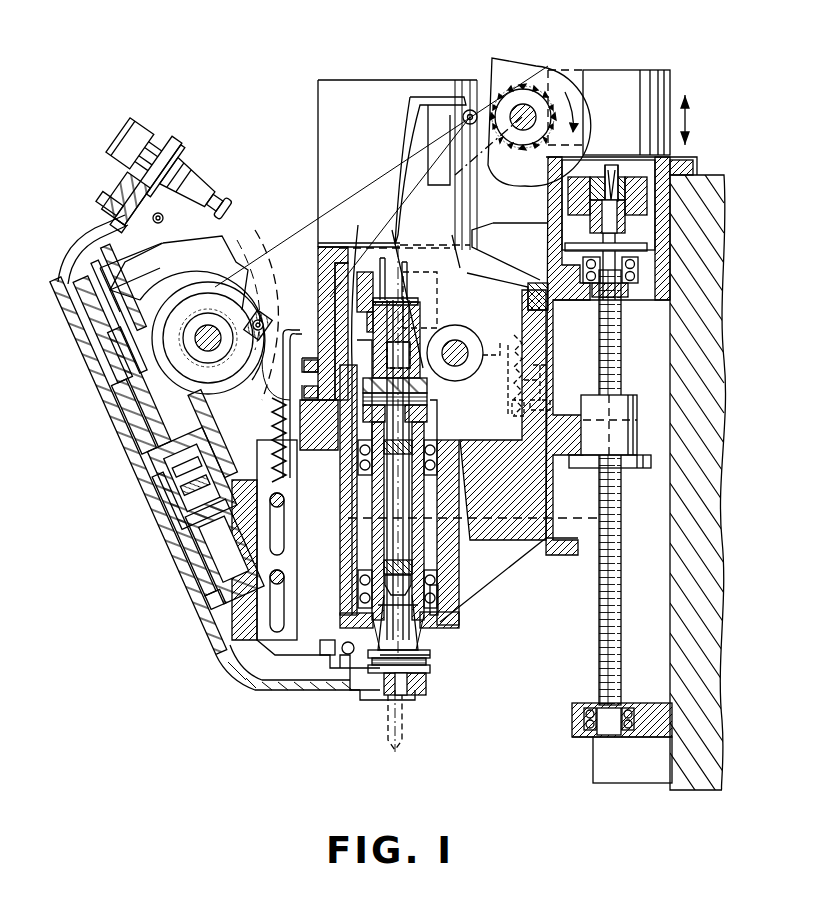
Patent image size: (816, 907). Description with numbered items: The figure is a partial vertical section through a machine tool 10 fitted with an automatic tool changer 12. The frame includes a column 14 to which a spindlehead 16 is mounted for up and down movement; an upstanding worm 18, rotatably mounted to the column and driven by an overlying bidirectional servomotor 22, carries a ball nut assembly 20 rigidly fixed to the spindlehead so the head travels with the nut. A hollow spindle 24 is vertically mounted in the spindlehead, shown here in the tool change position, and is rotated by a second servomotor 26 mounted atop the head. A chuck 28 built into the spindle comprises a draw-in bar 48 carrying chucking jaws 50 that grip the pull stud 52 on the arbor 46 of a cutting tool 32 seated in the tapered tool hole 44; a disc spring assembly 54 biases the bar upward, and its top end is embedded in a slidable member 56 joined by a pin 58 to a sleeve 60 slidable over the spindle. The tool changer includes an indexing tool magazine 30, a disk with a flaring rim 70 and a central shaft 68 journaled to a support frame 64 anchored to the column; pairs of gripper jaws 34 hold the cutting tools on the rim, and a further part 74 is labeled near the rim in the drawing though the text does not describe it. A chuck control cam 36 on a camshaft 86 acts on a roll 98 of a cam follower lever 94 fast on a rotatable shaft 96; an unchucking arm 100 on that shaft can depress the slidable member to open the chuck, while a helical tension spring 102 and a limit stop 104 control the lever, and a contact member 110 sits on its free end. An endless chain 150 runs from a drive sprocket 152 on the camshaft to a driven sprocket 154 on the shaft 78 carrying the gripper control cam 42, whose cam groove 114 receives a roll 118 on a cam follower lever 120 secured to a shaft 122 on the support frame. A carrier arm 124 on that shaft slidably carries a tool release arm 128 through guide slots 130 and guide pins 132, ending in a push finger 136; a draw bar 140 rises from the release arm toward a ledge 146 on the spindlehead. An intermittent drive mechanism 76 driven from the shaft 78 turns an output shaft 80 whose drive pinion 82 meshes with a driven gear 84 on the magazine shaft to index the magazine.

The machine tool 10 is at (733, 176).
The automatic tool changer 12 is at (276, 122).
The column 14 is at (704, 545).
The spindlehead 16 is at (517, 548).
The worm 18 is at (603, 578).
The ball nut assembly 20 is at (634, 395).
The bidirectional servomotor 22 is at (620, 72).
The hollow spindle 24 is at (423, 637).
The second servomotor 26 is at (336, 88).
The chuck 28 is at (447, 568).
The tool magazine 30 is at (58, 300).
The cutting tools 32 is at (118, 136).
The gripper jaws 34 is at (182, 152).
The chuck control cam 36 is at (560, 58).
The gripper control cam 42 is at (169, 228).
The tapered tool hole 44 is at (427, 652).
The arbor 46 is at (200, 190).
The draw-in bar 48 is at (405, 495).
The chucking jaws 50 is at (358, 584).
The pull stud 52 is at (228, 213).
The disc spring assembly 54 is at (363, 442).
The slidable member 56 is at (432, 390).
The pin 58 is at (428, 405).
The sleeve 60 is at (355, 262).
The support frame 64 is at (527, 232).
The central shaft 68 is at (160, 465).
The flaring rim 70 is at (100, 233).
The base plate 74 is at (341, 675).
The intermittent drive mechanism 76 is at (150, 258).
The shaft 78 is at (224, 296).
The output shaft 80 is at (88, 332).
The drive pinion 82 is at (92, 368).
The driven gear 84 is at (185, 545).
The camshaft 86 is at (519, 104).
The chuck control cam follower lever 94 is at (415, 103).
The rotatable shaft 96 is at (462, 340).
The roll 98 is at (468, 108).
The unchucking arm 100 is at (397, 343).
The helical tension spring 102 is at (517, 365).
The limit stop 104 is at (547, 370).
The contact member 110 is at (437, 118).
The cam groove 114 is at (162, 310).
The roll 118 is at (262, 256).
The cam follower lever 120 is at (265, 320).
The shaft 122 is at (214, 402).
The carrier arm 124 is at (268, 478).
The tool release arm 128 is at (268, 577).
The guide slots 130 is at (284, 612).
The guide pin 132 is at (290, 558).
The push finger 136 is at (293, 672).
The draw bar 140 is at (290, 296).
The ledge 146 is at (324, 406).
The endless chain 150 is at (354, 198).
The drive sprocket 152 is at (530, 88).
The driven sprocket 154 is at (205, 312).